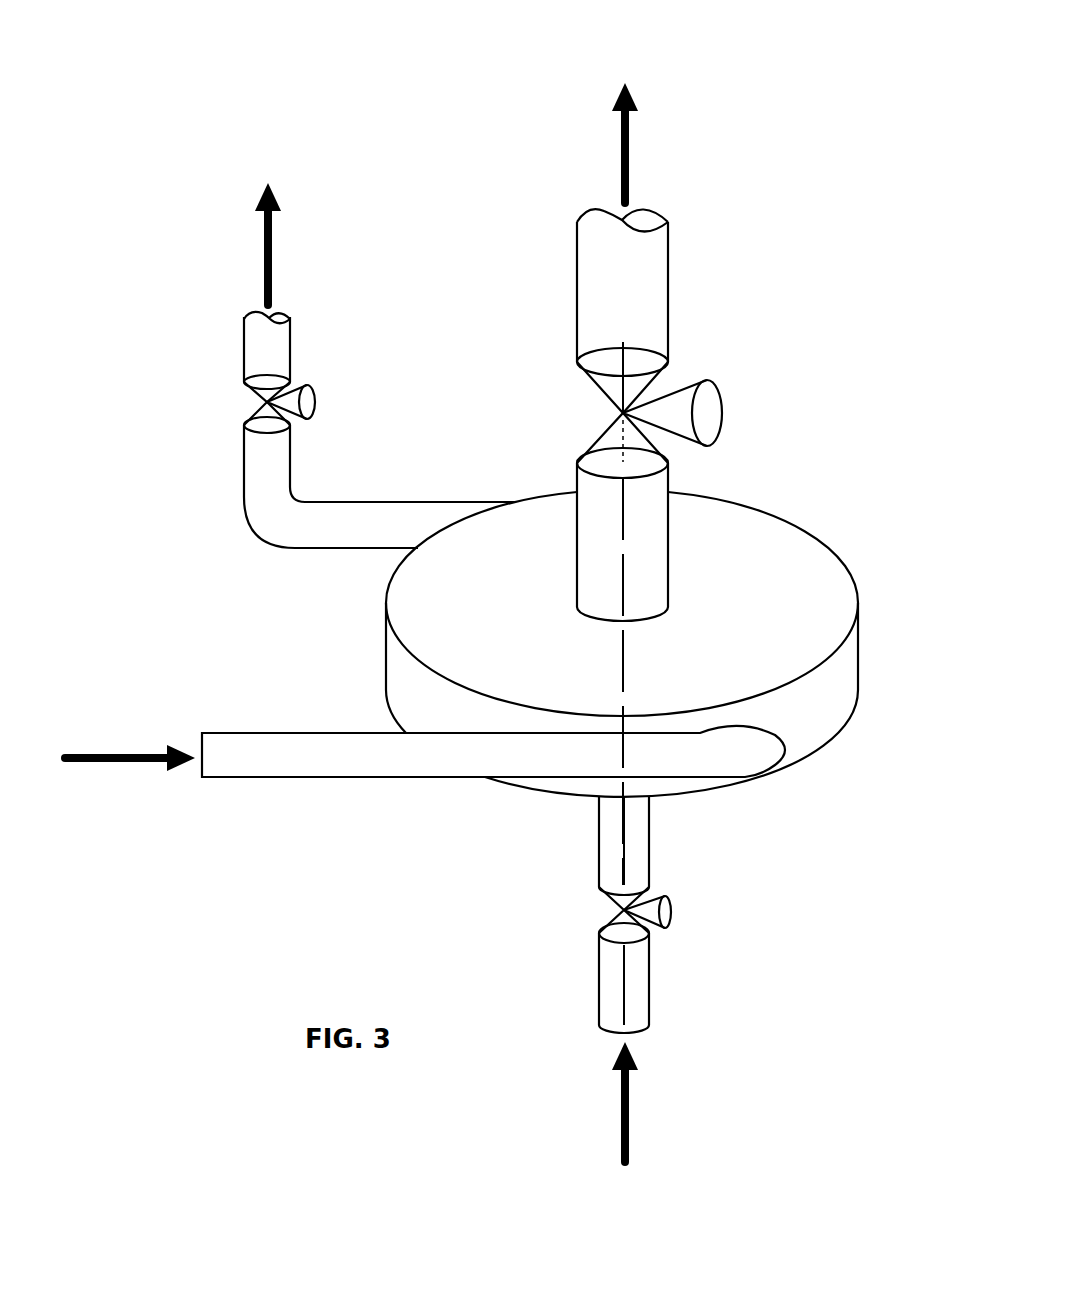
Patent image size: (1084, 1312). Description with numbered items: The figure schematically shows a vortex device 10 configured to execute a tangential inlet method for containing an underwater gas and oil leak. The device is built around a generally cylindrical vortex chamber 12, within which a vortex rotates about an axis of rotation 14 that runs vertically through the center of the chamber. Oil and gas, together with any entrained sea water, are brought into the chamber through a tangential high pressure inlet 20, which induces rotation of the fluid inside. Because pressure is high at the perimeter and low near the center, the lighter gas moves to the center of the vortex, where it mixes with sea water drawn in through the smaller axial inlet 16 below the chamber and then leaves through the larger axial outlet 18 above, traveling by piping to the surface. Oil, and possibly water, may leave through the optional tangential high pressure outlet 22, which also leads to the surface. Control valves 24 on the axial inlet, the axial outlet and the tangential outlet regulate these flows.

The vortex device 10 is at (771, 108).
The vortex chamber 12 is at (862, 648).
The axis of rotation 14 is at (626, 693).
The axial inlet 16 is at (596, 853).
The axial outlet 18 is at (575, 553).
The high pressure inlet 20 is at (373, 781).
The high pressure outlet 22 is at (367, 499).
The control valves 24 is at (737, 407).